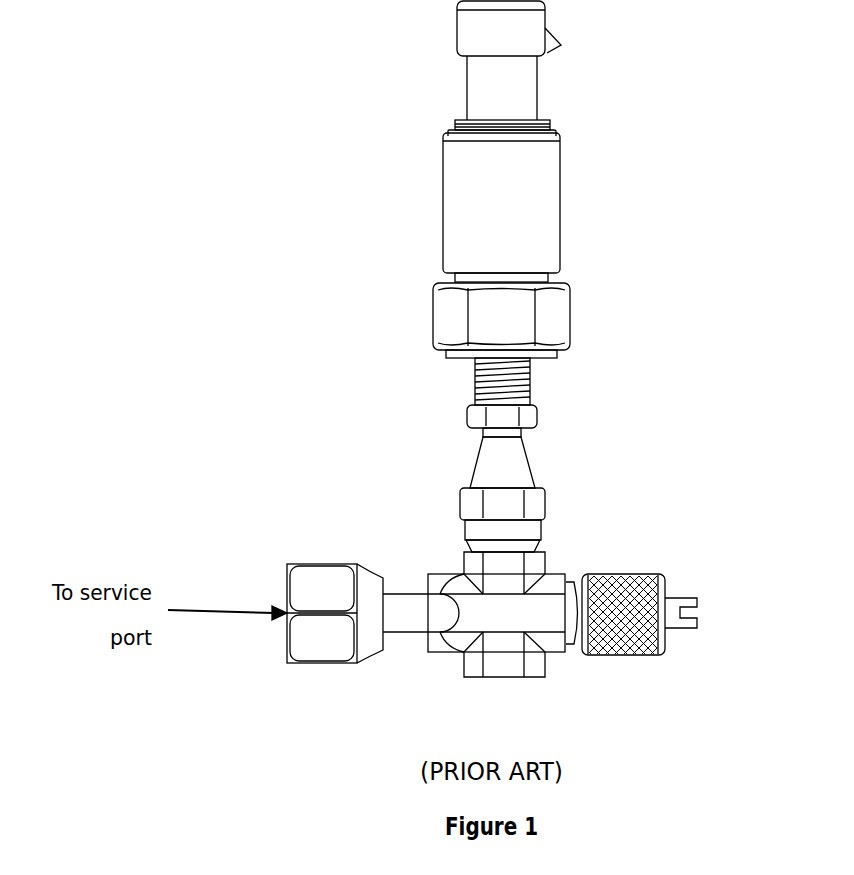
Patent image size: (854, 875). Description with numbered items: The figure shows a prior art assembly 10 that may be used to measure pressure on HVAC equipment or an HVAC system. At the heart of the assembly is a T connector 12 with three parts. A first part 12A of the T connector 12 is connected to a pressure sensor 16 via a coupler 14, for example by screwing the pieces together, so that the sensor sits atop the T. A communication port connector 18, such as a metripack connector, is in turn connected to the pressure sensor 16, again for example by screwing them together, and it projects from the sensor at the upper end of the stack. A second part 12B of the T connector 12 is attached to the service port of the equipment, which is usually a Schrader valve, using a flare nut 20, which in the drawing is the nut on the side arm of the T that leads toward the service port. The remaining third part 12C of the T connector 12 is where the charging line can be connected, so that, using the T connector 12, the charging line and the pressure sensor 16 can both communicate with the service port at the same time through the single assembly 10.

The prior art assembly 10 is at (198, 193).
The T connector 12 is at (488, 620).
The first part of the T connector 12A is at (540, 545).
The second part of the T connector 12B is at (443, 573).
The third part of the T connector 12C is at (567, 578).
The coupler 14 is at (527, 458).
The pressure sensor 16 is at (557, 168).
The communication port connector 18 is at (547, 26).
The flare nut 20 is at (300, 565).